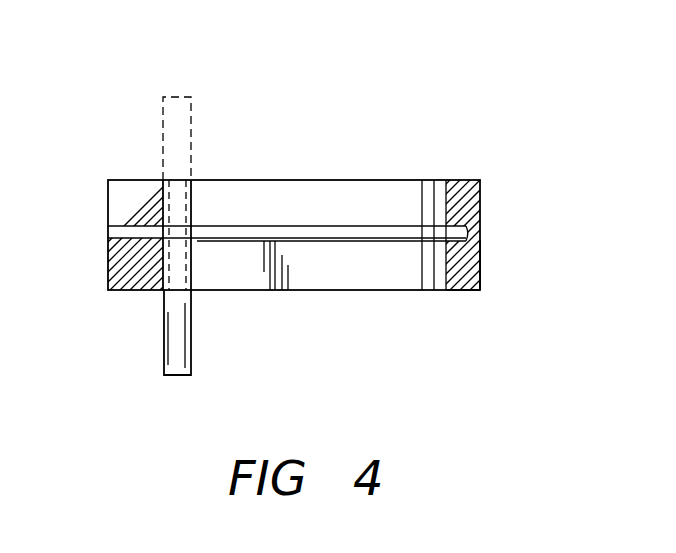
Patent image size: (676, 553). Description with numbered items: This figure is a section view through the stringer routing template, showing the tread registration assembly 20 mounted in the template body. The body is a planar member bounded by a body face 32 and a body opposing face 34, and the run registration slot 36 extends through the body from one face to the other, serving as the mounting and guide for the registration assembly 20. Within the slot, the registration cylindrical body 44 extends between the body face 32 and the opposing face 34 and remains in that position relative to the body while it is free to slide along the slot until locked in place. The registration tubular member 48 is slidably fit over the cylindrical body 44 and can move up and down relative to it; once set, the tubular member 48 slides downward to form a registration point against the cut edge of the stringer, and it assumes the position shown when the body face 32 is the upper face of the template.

The tread registration assembly 20 is at (210, 153).
The body face 32 is at (465, 180).
The body opposing face 34 is at (465, 290).
The run registration slot 36 is at (358, 180).
The registration cylindrical body 44 is at (186, 212).
The registration tubular member 48 is at (162, 99).